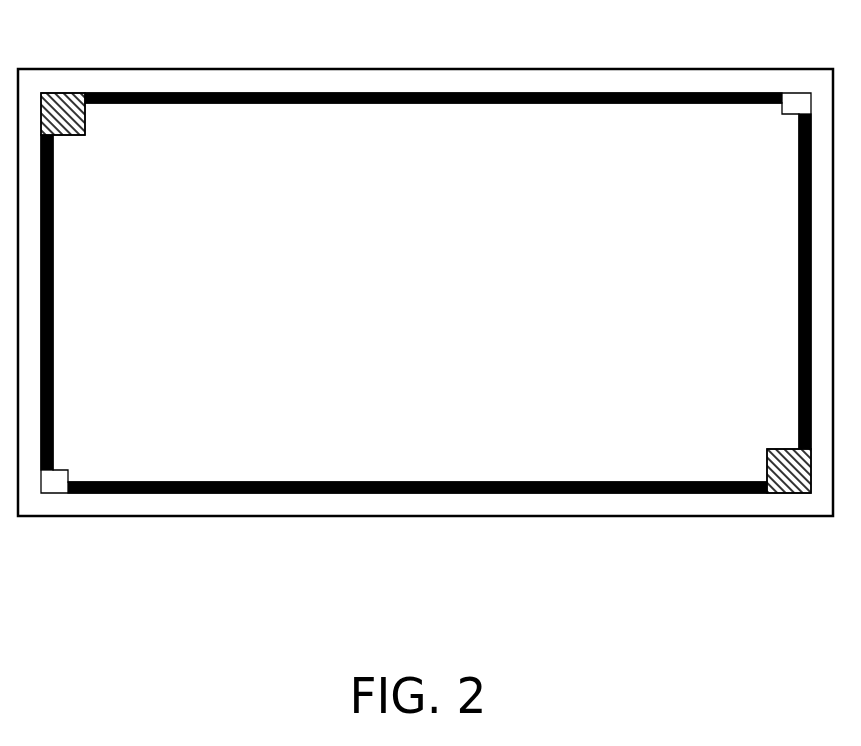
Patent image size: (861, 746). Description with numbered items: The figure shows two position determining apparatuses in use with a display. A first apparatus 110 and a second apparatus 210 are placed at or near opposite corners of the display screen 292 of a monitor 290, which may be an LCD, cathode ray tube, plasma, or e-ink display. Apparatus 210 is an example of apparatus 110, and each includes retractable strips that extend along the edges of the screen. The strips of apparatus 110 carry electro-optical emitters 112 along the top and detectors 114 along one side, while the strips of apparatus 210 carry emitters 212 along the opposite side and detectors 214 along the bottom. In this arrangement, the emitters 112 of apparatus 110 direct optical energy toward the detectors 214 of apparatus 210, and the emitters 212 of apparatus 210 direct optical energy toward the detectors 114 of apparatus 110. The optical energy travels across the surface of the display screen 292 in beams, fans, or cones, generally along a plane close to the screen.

The apparatus 110 is at (60, 105).
The electro-optical emitters 112 is at (414, 104).
The detectors 114 is at (55, 289).
The apparatus 210 is at (792, 480).
The emitters 212 is at (797, 259).
The detectors 214 is at (388, 481).
The monitor 290 is at (58, 519).
The display screen 292 is at (188, 437).